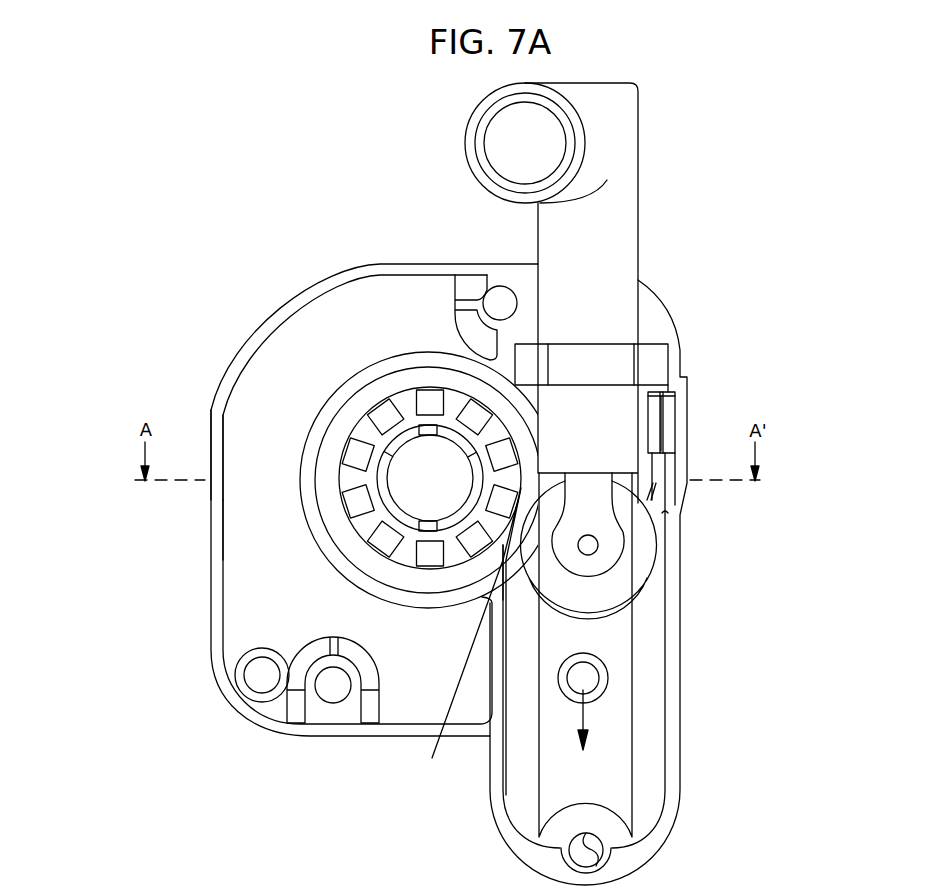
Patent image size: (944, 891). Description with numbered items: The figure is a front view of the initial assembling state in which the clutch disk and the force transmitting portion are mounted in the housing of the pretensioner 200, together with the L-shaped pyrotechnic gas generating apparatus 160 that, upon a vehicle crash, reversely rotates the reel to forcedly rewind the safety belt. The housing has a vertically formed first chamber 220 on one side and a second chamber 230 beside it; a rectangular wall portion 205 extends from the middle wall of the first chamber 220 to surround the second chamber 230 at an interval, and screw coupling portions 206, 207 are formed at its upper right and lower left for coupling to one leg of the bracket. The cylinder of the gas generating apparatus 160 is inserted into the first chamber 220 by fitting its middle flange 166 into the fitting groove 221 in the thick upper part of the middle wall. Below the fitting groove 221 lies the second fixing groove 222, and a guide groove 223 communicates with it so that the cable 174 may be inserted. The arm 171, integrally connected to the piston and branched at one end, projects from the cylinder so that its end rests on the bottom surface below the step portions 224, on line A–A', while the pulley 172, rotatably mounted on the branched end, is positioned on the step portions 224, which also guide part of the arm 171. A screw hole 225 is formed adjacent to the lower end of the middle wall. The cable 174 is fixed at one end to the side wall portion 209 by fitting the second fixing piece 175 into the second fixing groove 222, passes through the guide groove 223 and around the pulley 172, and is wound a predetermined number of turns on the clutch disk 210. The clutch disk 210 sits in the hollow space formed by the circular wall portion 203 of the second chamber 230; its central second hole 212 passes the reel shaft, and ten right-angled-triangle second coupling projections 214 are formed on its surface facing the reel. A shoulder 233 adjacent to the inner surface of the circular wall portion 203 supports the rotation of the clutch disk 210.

The pyrotechnic gas generating apparatus 160 is at (662, 84).
The middle flange 166 is at (643, 353).
The arm 171 is at (620, 530).
The pulley 172 is at (626, 570).
The cable 174 is at (432, 758).
The second fixing piece 175 is at (666, 435).
The pretensioner 200 is at (200, 690).
The circular wall portion 203 is at (343, 540).
The rectangular wall portion 205 is at (213, 432).
The screw coupling portion 206 is at (494, 290).
The screw coupling portion 207 is at (328, 688).
The side wall portion 209 is at (681, 682).
The clutch disk 210 is at (372, 391).
The second hole 212 is at (428, 400).
The second coupling projections 214 is at (426, 436).
The first chamber 220 is at (614, 731).
The fitting groove 221 is at (656, 367).
The second fixing groove 222 is at (660, 413).
The guide groove 223 is at (650, 490).
The step portions 224 is at (522, 727).
The screw hole 225 is at (610, 855).
The second chamber 230 is at (360, 444).
The shoulder 233 is at (313, 508).